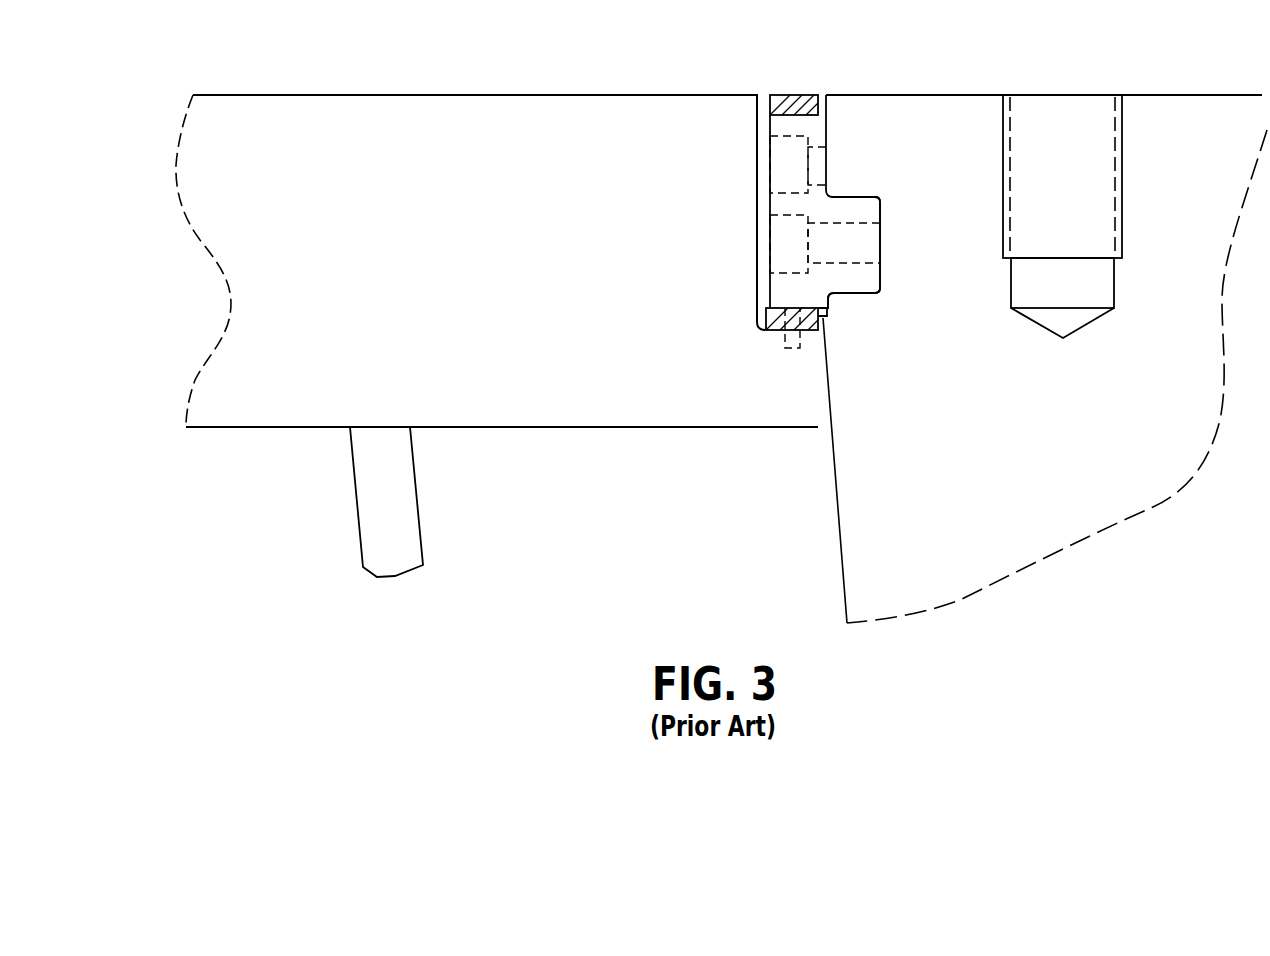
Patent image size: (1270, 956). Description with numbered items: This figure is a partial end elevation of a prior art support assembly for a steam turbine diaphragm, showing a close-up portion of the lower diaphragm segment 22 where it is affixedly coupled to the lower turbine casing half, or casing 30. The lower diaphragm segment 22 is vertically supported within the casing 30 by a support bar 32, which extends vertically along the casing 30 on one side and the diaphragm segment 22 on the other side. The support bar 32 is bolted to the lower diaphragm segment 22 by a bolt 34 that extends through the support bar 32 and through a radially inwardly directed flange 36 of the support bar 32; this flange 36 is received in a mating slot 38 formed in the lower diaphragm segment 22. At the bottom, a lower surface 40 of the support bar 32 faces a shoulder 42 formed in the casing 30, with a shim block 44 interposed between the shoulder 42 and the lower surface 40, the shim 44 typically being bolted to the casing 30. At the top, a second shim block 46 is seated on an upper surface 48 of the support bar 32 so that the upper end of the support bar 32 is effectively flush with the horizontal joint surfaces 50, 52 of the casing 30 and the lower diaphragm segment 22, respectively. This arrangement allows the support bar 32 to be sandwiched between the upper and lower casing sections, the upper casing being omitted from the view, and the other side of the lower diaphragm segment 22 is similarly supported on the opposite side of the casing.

The lower diaphragm segment 22 is at (1218, 115).
The casing 30 is at (490, 115).
The support bar 32 is at (845, 118).
The bolt 34 is at (860, 248).
The flange 36 is at (860, 215).
The mating slot 38 is at (843, 282).
The lower surface 40 is at (778, 318).
The shoulder 42 is at (825, 327).
The shim block 44 is at (792, 307).
The second shim block 46 is at (780, 103).
The upper surface 48 is at (808, 115).
The horizontal joint surface 50 is at (628, 94).
The horizontal joint surface 52 is at (1170, 93).